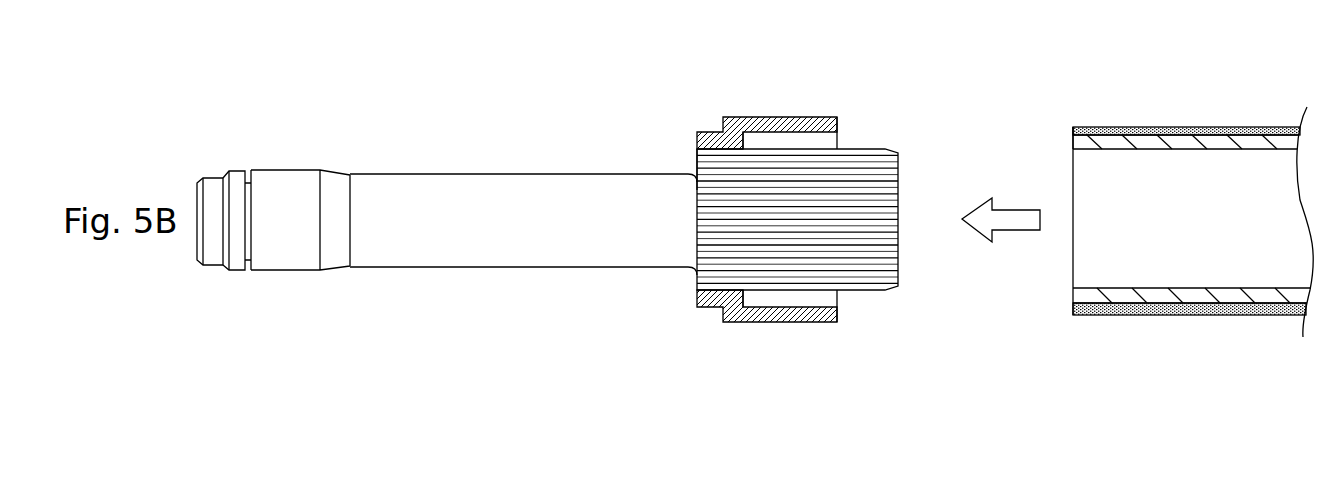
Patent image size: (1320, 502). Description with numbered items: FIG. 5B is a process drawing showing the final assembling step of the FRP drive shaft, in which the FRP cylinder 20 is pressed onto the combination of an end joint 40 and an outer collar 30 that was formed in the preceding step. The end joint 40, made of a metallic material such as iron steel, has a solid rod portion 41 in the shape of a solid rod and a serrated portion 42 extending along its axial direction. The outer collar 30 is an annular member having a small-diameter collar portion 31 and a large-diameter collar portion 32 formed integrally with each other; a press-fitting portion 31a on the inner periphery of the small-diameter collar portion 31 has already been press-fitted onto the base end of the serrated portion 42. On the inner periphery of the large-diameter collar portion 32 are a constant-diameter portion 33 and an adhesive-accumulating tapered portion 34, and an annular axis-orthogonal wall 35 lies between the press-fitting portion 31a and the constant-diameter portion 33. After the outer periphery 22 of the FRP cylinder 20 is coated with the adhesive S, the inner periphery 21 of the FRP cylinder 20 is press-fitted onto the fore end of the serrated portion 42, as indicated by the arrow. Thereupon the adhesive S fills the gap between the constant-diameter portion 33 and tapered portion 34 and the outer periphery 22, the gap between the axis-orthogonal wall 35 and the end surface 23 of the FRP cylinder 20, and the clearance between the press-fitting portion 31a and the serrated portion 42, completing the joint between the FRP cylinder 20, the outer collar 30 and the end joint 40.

The FRP cylinder 20 is at (1176, 211).
The inner periphery 21 is at (1106, 302).
The outer periphery 22 is at (1200, 316).
The end surface 23 is at (1073, 138).
The adhesive S is at (1150, 128).
The outer collar 30 is at (752, 211).
The small-diameter collar portion 31 is at (707, 130).
The press-fitting portion 31a is at (720, 150).
The large-diameter collar portion 32 is at (762, 117).
The constant-diameter portion 33 is at (770, 143).
The adhesive-accumulating tapered portion 34 is at (835, 128).
The axis-orthogonal wall 35 is at (752, 323).
The end joint 40 is at (566, 204).
The solid rod portion 41 is at (486, 268).
The serrated portion 42 is at (850, 235).